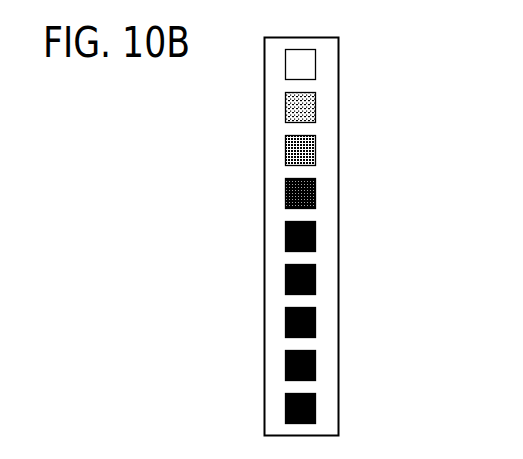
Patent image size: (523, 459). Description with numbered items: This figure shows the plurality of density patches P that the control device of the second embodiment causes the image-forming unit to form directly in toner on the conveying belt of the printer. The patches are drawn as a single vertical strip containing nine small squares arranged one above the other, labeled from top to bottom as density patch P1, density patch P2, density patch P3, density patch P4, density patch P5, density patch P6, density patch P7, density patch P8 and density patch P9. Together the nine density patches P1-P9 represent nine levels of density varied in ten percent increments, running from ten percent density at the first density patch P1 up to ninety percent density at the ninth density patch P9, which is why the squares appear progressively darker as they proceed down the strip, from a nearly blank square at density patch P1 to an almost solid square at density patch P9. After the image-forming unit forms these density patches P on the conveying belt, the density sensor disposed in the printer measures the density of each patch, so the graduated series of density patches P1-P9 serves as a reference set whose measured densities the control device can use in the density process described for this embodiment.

The density patches P is at (403, 76).
The density patch P1 is at (316, 64).
The density patch P2 is at (316, 107).
The density patch P3 is at (316, 150).
The density patch P4 is at (316, 193).
The density patch P5 is at (316, 236).
The density patch P6 is at (316, 279).
The density patch P7 is at (316, 322).
The density patch P8 is at (316, 365).
The density patch P9 is at (316, 408).